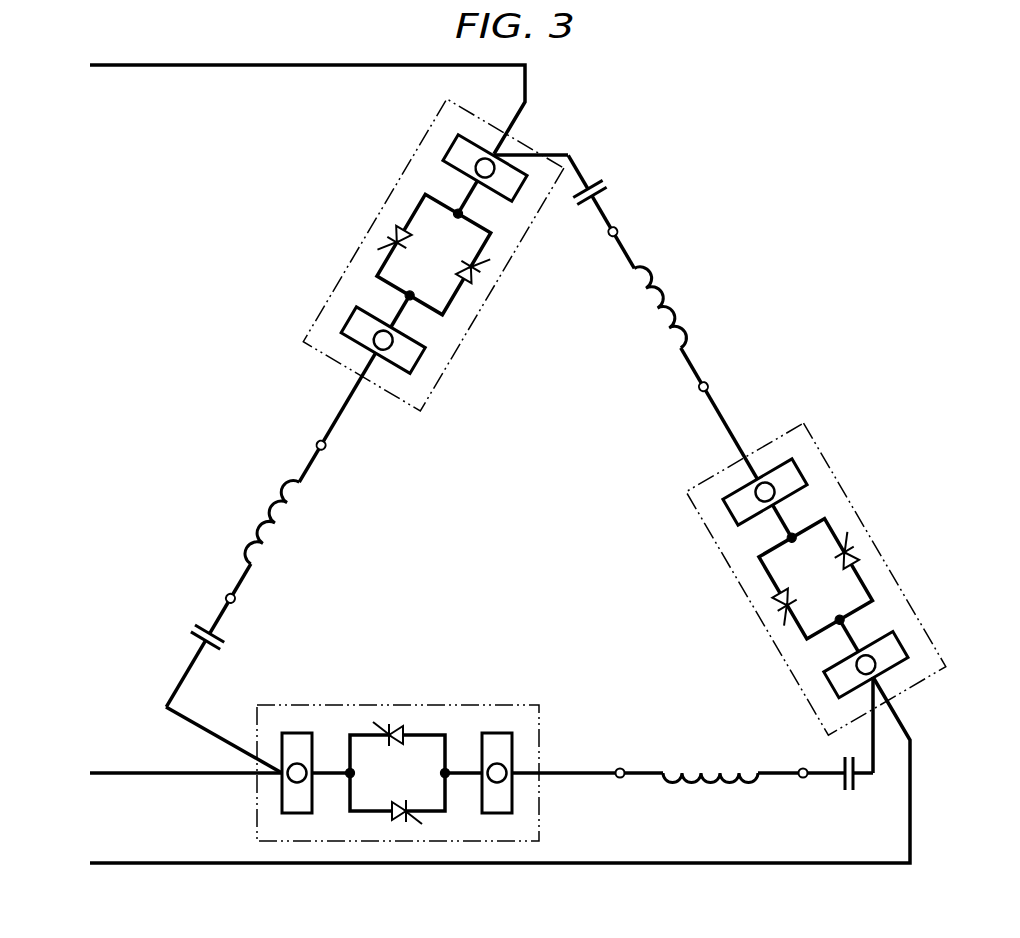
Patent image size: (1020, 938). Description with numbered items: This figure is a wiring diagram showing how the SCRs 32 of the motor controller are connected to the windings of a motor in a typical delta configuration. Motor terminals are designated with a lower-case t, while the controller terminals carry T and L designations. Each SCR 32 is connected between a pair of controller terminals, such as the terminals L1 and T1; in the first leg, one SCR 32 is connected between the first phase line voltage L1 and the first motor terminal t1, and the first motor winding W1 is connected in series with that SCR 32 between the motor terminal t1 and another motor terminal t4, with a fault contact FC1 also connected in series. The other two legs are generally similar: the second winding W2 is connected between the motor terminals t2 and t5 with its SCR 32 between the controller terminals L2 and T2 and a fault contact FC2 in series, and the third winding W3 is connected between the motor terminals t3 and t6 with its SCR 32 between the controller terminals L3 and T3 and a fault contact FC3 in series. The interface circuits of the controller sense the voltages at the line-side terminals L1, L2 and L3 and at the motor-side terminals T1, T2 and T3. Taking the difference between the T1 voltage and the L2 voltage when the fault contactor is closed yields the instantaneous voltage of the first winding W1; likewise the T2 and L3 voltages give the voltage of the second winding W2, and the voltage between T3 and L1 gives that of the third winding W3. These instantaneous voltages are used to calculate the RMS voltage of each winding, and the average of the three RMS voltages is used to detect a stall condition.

The first phase line voltage terminal L1 is at (295, 126).
The second phase line terminal L2 is at (187, 775).
The third phase line terminal L3 is at (494, 753).
The first motor-side controller terminal T1 is at (374, 338).
The second motor-side controller terminal T2 is at (497, 788).
The third motor-side controller terminal T3 is at (774, 489).
The SCR 32 is at (392, 198).
The first motor winding W1 is at (274, 520).
The second motor winding W2 is at (710, 764).
The third motor winding W3 is at (660, 305).
The fault contact FC1 is at (188, 629).
The fault contact FC2 is at (851, 792).
The fault contact FC3 is at (609, 183).
The first motor terminal t1 is at (310, 437).
The motor terminal t2 is at (623, 791).
The motor terminal t3 is at (716, 378).
The motor terminal t4 is at (221, 592).
The motor terminal t5 is at (805, 791).
The motor terminal t6 is at (625, 225).